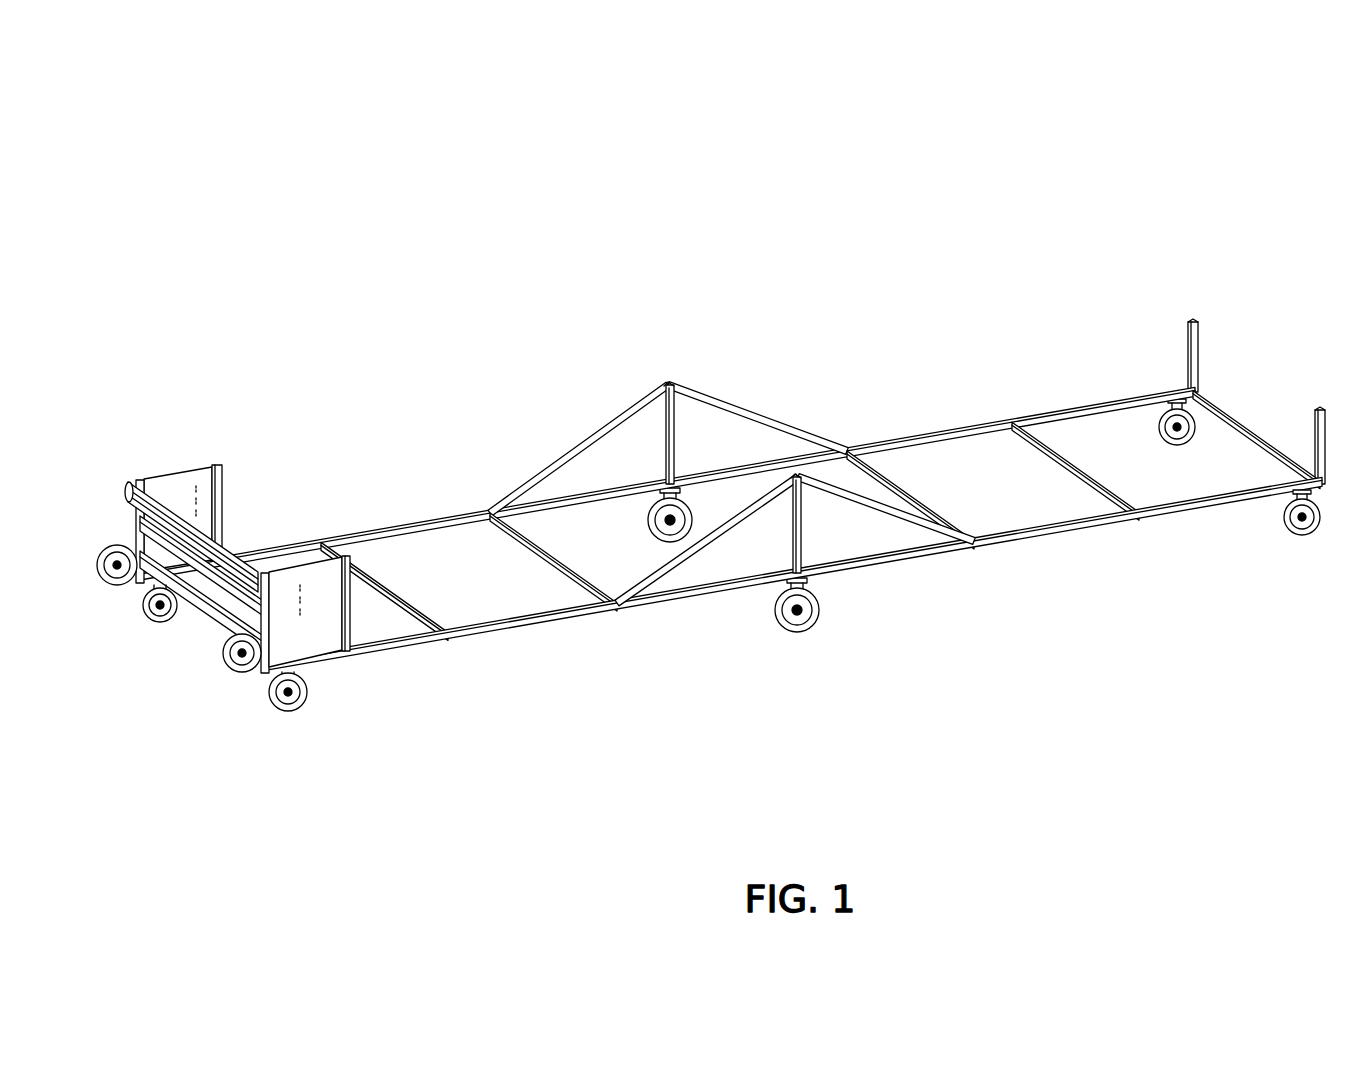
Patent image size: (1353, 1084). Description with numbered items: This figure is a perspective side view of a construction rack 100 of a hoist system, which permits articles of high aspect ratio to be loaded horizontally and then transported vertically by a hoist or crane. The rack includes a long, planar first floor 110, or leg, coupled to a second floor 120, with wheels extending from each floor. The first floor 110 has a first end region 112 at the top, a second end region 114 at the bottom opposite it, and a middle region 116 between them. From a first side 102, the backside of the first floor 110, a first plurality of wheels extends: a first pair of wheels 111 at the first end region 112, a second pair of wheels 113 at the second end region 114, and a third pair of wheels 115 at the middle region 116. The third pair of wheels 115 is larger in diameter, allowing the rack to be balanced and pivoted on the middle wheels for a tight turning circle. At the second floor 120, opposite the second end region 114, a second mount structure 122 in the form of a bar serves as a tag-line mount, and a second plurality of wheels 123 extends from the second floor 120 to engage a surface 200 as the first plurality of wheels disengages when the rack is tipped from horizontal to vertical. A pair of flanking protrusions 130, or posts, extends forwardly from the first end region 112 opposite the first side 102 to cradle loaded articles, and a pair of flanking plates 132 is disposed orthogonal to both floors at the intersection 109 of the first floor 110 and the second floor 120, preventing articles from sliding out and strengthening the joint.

The construction rack 100 is at (1094, 195).
The first side 102 is at (1032, 567).
The intersection 109 is at (323, 691).
The first floor 110 is at (885, 341).
The first pair of wheels 111 is at (1222, 409).
The first end region 112 is at (1218, 533).
The second pair of wheels 113 is at (150, 613).
The second end region 114 is at (281, 452).
The third pair of wheels 115 is at (665, 542).
The middle region 116 is at (679, 327).
The second floor 120 is at (169, 655).
The second mount structure 122 is at (128, 488).
The second plurality of wheels 123 is at (102, 573).
The flanking protrusions 130 is at (1205, 346).
The flanking plates 132 is at (178, 470).
The surface 200 is at (497, 387).